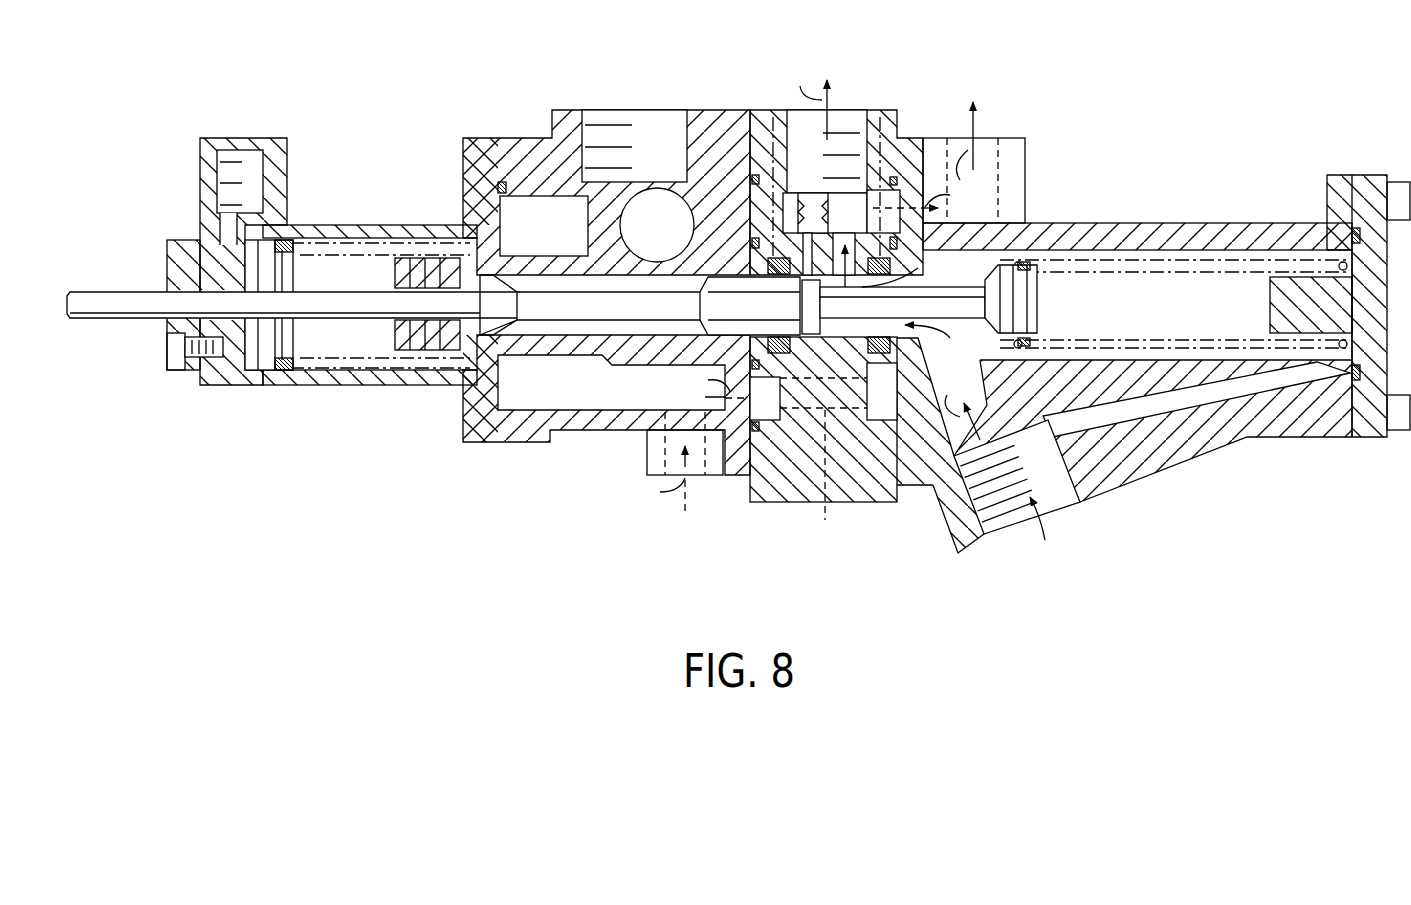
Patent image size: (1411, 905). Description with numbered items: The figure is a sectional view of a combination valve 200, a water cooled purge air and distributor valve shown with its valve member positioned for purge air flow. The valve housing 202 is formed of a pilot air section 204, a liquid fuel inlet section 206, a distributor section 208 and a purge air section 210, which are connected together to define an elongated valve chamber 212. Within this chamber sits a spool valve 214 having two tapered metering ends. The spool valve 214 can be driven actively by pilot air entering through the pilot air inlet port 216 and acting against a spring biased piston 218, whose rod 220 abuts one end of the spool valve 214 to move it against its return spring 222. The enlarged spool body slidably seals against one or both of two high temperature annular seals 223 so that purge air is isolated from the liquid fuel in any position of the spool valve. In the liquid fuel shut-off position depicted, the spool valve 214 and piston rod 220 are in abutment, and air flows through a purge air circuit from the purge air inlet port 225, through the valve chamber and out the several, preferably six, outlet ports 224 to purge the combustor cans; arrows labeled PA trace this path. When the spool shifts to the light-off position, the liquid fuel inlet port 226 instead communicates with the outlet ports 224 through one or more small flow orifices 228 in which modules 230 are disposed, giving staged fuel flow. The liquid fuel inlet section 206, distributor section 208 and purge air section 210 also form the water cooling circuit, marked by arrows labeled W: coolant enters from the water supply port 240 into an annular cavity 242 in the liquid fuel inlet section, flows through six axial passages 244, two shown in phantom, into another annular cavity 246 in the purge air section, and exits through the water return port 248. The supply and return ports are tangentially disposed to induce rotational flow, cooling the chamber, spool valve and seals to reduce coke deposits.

The combination valve 200 is at (740, 38).
The valve housing 202 is at (1107, 222).
The pilot air section 204 is at (275, 387).
The liquid fuel inlet section 206 is at (619, 297).
The distributor section 208 is at (864, 306).
The purge air section 210 is at (1142, 477).
The valve chamber 212 is at (543, 306).
The spool valve 214 is at (1020, 302).
The pilot air inlet port 216 is at (243, 146).
The spring biased piston 218 is at (268, 277).
The piston rod 220 is at (347, 307).
The return spring 222 is at (1030, 338).
The high temperature annular seals 223 is at (788, 277).
The outlet ports 224 is at (848, 120).
The purge air inlet port 225 is at (990, 534).
The liquid fuel inlet port 226 is at (608, 125).
The small flow orifices 228 is at (762, 210).
The modules 230 is at (691, 225).
The water supply port 240 is at (708, 478).
The annular cavity 242 is at (628, 394).
The axial passages 244 is at (768, 503).
The annular cavity 246 is at (882, 422).
The water return port 248 is at (1000, 137).